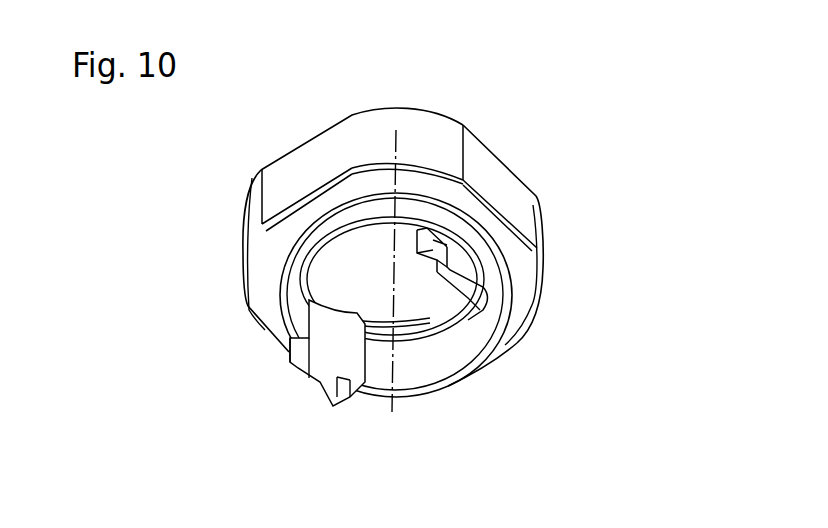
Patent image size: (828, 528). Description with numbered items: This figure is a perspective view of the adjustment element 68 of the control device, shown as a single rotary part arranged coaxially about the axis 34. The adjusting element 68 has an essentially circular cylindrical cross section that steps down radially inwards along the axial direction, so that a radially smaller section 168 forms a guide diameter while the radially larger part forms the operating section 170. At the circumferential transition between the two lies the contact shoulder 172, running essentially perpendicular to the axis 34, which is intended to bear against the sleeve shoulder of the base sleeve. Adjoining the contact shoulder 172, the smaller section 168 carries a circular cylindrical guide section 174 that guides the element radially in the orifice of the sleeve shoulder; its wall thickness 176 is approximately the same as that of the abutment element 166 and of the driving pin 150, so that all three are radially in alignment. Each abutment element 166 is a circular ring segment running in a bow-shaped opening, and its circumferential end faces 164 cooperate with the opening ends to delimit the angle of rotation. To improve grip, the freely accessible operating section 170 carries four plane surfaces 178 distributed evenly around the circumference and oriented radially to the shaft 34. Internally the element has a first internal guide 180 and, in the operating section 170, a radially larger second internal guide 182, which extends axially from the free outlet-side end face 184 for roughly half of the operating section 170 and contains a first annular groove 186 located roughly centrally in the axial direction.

The adjustment element 68 is at (635, 122).
The axis 34 is at (390, 410).
The driving pin 150 is at (470, 273).
The circumferential end face 164 is at (424, 236).
The abutment element 166 is at (445, 253).
The radially smaller section 168 is at (266, 272).
The operating section 170 is at (241, 231).
The contact shoulder 172 is at (523, 293).
The guide section 174 is at (345, 212).
The wall thickness 176 is at (330, 277).
The plane surfaces 178 is at (472, 152).
The first internal guide 180 is at (336, 348).
The second internal guide 182 is at (465, 323).
The end face 184 is at (427, 104).
The first annular groove 186 is at (455, 354).